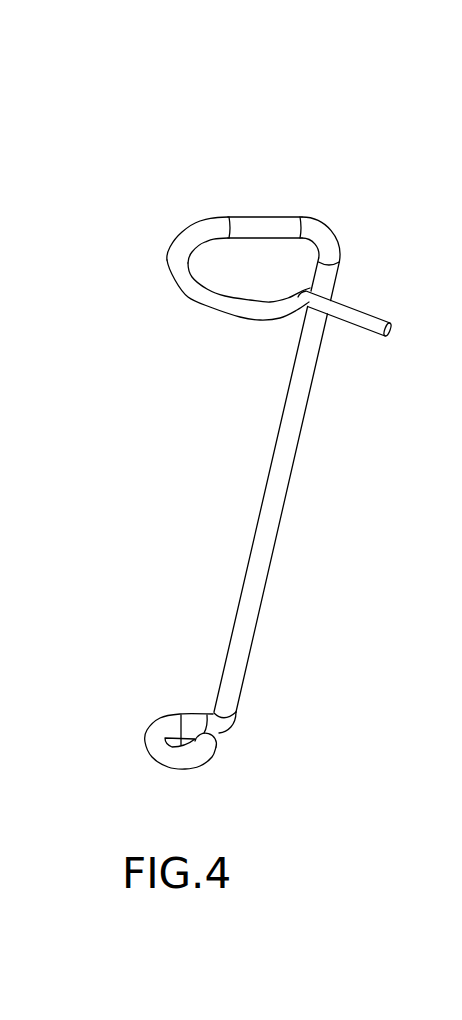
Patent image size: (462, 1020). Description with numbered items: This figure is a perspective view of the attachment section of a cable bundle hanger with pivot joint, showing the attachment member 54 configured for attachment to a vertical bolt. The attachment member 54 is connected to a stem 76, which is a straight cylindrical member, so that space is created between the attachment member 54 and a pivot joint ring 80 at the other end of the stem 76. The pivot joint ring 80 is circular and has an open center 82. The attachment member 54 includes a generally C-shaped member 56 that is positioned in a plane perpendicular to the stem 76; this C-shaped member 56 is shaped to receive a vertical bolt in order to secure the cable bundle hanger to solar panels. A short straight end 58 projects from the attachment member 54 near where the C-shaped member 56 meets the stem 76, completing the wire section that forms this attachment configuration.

The attachment member 54 is at (207, 216).
The C-shaped member 56 is at (175, 252).
The peg 58 is at (363, 316).
The stem 76 is at (263, 537).
The pivot joint ring 80 is at (199, 750).
The open center 82 is at (181, 738).